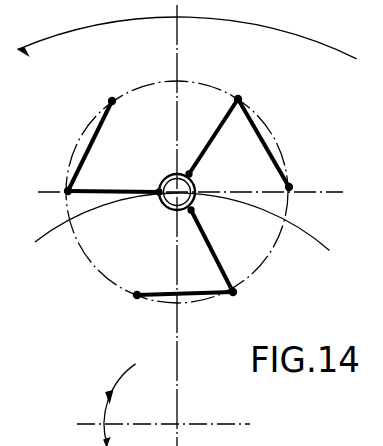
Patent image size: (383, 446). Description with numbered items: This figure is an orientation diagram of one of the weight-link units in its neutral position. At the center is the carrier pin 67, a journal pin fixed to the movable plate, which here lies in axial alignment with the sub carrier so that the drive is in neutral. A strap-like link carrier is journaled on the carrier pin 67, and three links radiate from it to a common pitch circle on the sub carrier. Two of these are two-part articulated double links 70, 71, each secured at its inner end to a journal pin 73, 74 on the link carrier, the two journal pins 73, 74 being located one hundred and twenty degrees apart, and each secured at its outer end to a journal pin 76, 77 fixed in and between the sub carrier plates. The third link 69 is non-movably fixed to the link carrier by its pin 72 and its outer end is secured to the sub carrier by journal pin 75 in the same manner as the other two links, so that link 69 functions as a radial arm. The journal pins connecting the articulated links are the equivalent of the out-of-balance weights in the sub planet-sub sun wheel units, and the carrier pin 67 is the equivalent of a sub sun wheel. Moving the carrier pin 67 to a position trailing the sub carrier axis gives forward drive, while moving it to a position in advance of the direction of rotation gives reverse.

The carrier pin 67 is at (195, 189).
The link 69 is at (238, 99).
The articulated double link 70 is at (68, 191).
The articulated double link 71 is at (236, 292).
The pin 72 is at (189, 174).
The journal pin 73 is at (159, 192).
The journal pin 74 is at (191, 210).
The journal pin 75 is at (289, 187).
The journal pin 76 is at (112, 101).
The journal pin 77 is at (137, 295).